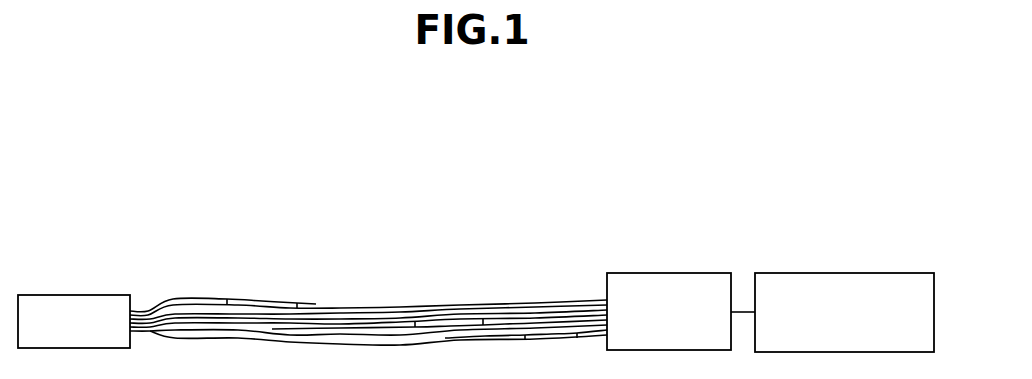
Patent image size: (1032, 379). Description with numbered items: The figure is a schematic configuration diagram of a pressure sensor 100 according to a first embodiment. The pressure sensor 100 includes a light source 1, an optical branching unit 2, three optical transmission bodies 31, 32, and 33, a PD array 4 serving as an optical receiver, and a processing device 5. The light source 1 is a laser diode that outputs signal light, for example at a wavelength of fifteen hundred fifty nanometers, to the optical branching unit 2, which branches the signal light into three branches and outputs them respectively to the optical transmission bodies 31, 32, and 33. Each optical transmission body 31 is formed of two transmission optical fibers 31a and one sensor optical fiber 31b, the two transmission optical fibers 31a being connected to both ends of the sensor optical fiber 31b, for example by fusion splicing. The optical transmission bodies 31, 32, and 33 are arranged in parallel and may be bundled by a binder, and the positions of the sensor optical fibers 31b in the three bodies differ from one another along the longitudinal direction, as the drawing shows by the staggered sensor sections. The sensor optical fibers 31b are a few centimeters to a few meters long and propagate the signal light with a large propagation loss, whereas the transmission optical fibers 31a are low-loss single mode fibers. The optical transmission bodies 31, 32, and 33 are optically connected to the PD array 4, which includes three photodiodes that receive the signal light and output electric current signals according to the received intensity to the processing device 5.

The pressure sensor 100 is at (656, 120).
The light source 1 is at (88, 296).
The optical branching unit 2 is at (141, 272).
The optical transmission body 31 is at (332, 167).
The optical transmission body 32 is at (490, 167).
The optical transmission body 33 is at (647, 168).
The transmission optical fiber 31a is at (205, 299).
The sensor optical fiber 31b is at (257, 303).
The PD array 4 is at (690, 274).
The processing device 5 is at (886, 273).